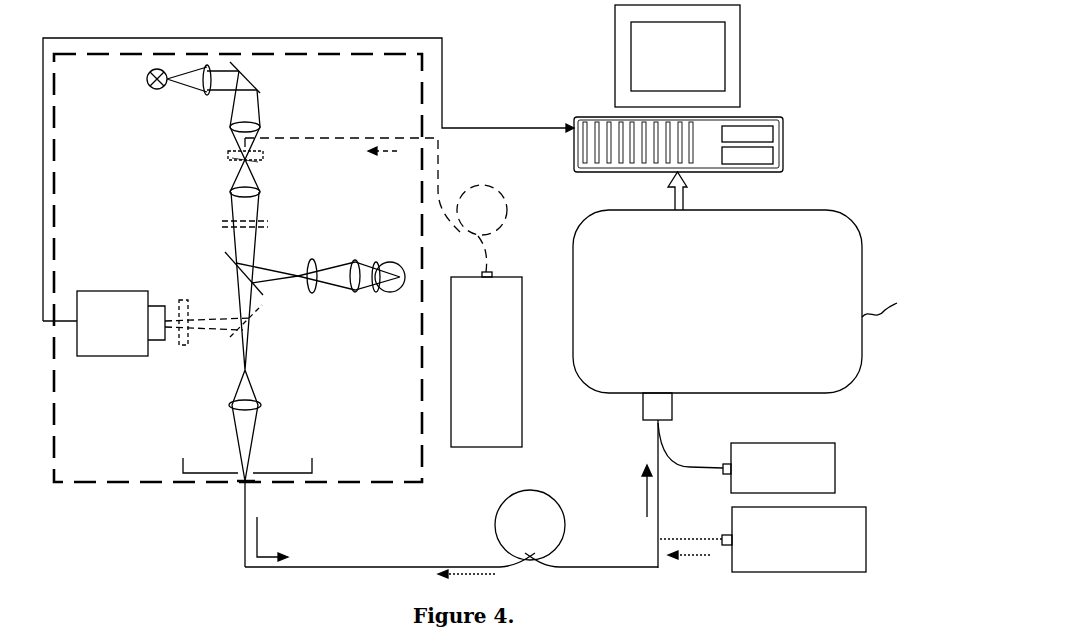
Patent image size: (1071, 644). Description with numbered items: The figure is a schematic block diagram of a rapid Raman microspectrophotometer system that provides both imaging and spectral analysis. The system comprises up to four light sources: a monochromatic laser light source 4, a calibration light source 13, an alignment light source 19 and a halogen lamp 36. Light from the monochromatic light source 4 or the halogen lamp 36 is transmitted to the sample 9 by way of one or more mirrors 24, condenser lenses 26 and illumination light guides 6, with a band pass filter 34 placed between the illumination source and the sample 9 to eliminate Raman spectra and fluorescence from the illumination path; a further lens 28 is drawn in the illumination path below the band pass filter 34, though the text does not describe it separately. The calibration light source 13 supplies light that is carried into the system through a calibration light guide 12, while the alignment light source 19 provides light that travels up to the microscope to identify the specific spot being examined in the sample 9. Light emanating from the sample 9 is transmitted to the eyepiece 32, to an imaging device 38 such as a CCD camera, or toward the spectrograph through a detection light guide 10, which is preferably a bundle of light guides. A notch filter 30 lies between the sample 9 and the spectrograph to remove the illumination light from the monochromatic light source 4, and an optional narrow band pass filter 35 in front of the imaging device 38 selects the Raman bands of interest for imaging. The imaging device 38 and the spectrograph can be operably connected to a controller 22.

The monochromatic light source 4 is at (522, 440).
The illumination light transmission guide 6 is at (354, 136).
The sample 9 is at (232, 162).
The detection light guide 10 is at (330, 567).
The calibration light guide 12 is at (680, 466).
The calibration light source 13 is at (795, 443).
The alignment light source 19 is at (866, 538).
The controller 22 is at (783, 117).
The mirror 24 is at (262, 84).
The condenser lens 26 is at (262, 129).
The lens 28 is at (262, 193).
The notch filter 30 is at (270, 226).
The eyepiece 32 is at (338, 250).
The band pass filter 34 is at (265, 159).
The narrow band pass filter 35 is at (184, 300).
The halogen lamp 36 is at (148, 83).
The imaging device 38 is at (103, 291).